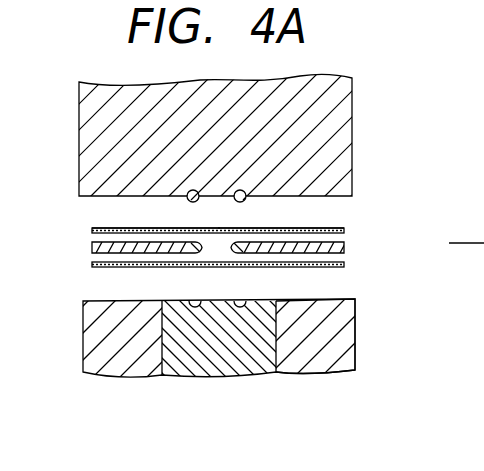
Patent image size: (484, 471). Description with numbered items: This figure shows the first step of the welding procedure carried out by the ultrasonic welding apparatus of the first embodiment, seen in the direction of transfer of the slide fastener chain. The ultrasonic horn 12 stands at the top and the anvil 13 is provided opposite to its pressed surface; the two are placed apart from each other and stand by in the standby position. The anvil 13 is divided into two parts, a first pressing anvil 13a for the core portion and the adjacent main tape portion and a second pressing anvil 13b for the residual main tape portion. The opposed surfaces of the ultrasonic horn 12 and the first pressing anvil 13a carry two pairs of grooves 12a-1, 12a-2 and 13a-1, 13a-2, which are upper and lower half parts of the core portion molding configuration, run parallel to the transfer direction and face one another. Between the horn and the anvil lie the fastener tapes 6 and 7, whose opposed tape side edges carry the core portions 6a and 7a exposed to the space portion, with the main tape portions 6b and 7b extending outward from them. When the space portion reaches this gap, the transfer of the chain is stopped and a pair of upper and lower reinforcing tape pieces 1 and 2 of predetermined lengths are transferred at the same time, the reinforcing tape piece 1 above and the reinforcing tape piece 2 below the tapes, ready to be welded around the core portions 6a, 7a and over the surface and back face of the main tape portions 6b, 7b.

The reinforcing tape piece 1 is at (303, 227).
The reinforcing tape piece 2 is at (99, 266).
The fastener tape 6 is at (36, 215).
The core portion 6a is at (92, 231).
The main tape portion 6b is at (92, 247).
The fastener tape 7 is at (396, 208).
The core portion 7a is at (265, 237).
The main tape portion 7b is at (344, 247).
The ultrasonic horn 12 is at (352, 112).
The groove 12a-1 is at (190, 198).
The groove 12a-2 is at (247, 199).
The anvil 13 is at (242, 235).
The first pressing anvil 13a is at (227, 363).
The groove 13a-1 is at (188, 297).
The groove 13a-2 is at (247, 298).
The second pressing anvil 13b is at (343, 345).